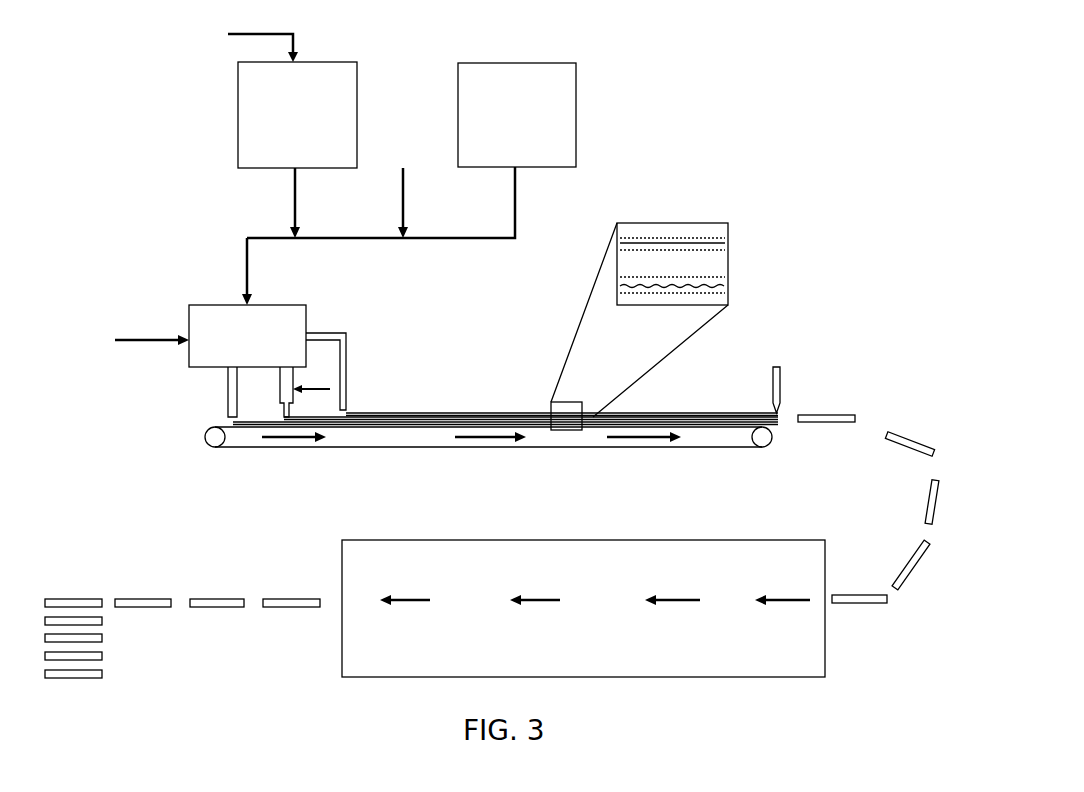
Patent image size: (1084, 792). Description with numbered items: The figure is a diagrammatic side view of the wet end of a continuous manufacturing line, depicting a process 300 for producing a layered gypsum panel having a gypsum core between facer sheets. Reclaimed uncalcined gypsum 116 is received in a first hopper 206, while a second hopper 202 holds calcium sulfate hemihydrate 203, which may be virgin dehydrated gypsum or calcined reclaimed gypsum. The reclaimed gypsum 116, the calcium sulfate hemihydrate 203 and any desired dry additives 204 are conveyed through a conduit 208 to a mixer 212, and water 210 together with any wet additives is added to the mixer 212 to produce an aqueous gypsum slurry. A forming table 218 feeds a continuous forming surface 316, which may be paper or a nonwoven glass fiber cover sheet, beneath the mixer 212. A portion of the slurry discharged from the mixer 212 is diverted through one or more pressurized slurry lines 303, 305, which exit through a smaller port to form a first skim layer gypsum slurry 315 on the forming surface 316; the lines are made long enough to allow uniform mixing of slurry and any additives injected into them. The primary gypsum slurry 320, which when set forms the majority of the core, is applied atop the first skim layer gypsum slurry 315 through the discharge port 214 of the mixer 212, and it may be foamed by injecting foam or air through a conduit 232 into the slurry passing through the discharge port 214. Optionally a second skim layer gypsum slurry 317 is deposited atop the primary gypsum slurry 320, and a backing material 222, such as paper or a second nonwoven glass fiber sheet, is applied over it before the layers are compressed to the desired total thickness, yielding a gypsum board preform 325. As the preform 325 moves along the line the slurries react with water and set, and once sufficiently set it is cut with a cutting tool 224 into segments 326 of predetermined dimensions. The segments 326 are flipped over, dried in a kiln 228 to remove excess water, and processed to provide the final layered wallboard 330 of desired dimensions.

The reclaimed gypsum 116 is at (296, 40).
The first hopper 206 is at (297, 115).
The second hopper 202 is at (517, 115).
The dry additives 204 is at (402, 212).
The calcium sulfate hemihydrate 203 is at (517, 216).
The conduit 208 is at (252, 256).
The water 210 is at (140, 330).
The mixer 212 is at (247, 336).
The conduit 232 is at (306, 387).
The discharge port 214 is at (280, 385).
The pressurized slurry line 303 is at (228, 396).
The pressurized slurry line 305 is at (352, 412).
The second skim layer gypsum slurry 317 is at (395, 413).
The first skim layer gypsum slurry 315 is at (232, 419).
The forming surface 316 is at (210, 423).
The primary gypsum slurry 320 is at (284, 446).
The backing material 222 is at (450, 413).
The forming table 218 is at (376, 448).
The cutting tool 224 is at (773, 390).
The gypsum board preform 325 is at (798, 417).
The segments 326 is at (857, 418).
The kiln 228 is at (583, 608).
The layered wallboard 330 is at (290, 598).
The process 300 is at (676, 136).